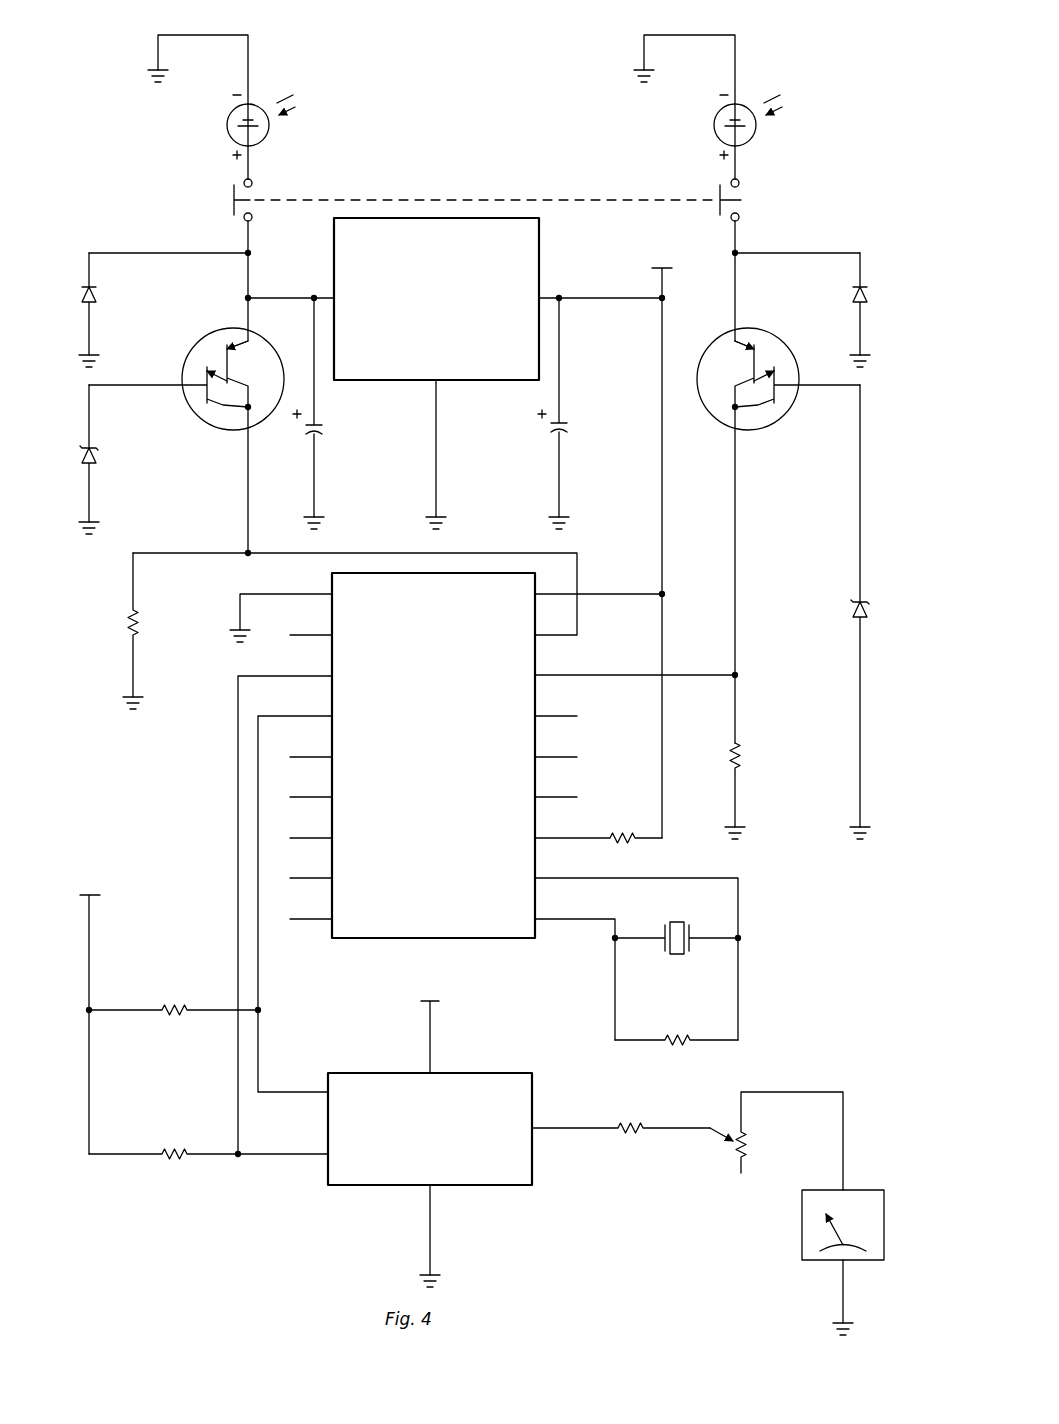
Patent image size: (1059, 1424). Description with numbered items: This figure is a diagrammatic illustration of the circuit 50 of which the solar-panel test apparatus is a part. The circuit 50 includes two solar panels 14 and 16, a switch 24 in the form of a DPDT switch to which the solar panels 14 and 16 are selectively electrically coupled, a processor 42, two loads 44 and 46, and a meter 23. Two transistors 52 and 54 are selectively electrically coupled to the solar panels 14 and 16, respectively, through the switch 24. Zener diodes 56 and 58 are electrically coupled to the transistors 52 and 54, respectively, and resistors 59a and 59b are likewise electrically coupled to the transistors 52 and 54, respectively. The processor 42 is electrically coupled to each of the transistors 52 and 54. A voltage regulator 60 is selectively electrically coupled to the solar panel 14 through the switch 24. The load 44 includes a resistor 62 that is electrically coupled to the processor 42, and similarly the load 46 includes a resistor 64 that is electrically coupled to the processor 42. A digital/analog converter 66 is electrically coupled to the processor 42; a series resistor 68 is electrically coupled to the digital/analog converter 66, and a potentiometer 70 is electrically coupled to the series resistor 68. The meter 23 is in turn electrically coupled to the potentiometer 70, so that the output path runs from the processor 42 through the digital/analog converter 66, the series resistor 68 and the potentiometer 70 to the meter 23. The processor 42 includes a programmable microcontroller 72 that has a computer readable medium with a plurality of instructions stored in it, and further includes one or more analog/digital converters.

The solar panel 14 is at (268, 137).
The solar panel 16 is at (755, 137).
The switch 24 is at (400, 200).
The circuit 50 is at (838, 100).
The transistor 52 is at (234, 328).
The transistor 54 is at (716, 424).
The Zener diode 56 is at (85, 448).
The Zener diode 58 is at (852, 600).
The resistor 59a is at (128, 630).
The resistor 59b is at (722, 765).
The voltage regulator 60 is at (334, 257).
The resistor 62 is at (165, 1150).
The resistor 64 is at (165, 1006).
The digital/analog converter 66 is at (388, 1188).
The series resistor 68 is at (622, 1125).
The potentiometer 70 is at (716, 1148).
The programmable microcontroller 72 is at (378, 940).
The processor 42 is at (433, 785).
The load 44 is at (188, 1076).
The load 46 is at (178, 946).
The meter 23 is at (799, 1255).